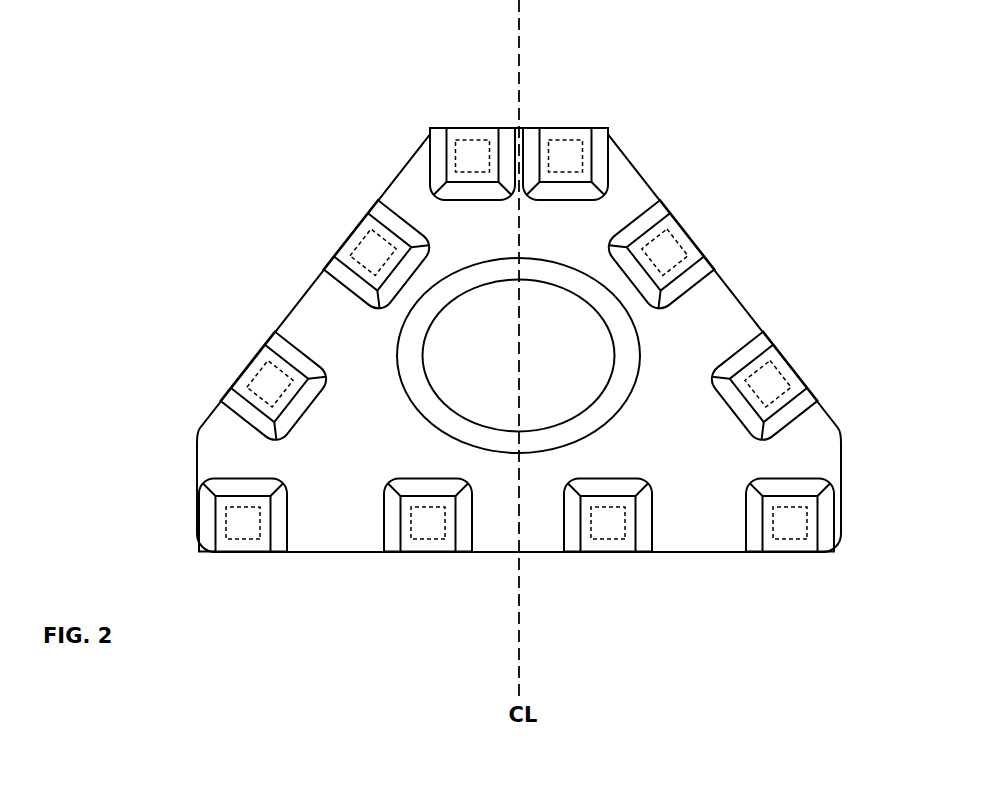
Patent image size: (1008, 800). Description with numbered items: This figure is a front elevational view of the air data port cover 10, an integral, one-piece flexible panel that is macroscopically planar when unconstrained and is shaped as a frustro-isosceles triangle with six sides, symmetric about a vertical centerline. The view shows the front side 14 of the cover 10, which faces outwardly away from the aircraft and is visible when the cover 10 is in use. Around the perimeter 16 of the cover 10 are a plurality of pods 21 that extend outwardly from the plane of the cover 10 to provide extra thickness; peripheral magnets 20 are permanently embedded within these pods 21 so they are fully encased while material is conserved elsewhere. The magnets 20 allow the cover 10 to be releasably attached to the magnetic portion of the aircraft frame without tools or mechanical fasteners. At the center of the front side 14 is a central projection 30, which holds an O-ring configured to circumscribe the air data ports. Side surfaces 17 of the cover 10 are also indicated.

The air data port cover 10 is at (719, 91).
The front side 14 is at (528, 340).
The perimeter 16 is at (198, 485).
The side surface 17 is at (402, 167).
The peripheral magnets 20 is at (481, 145).
The pods 21 is at (455, 135).
The central projection 30 is at (518, 355).